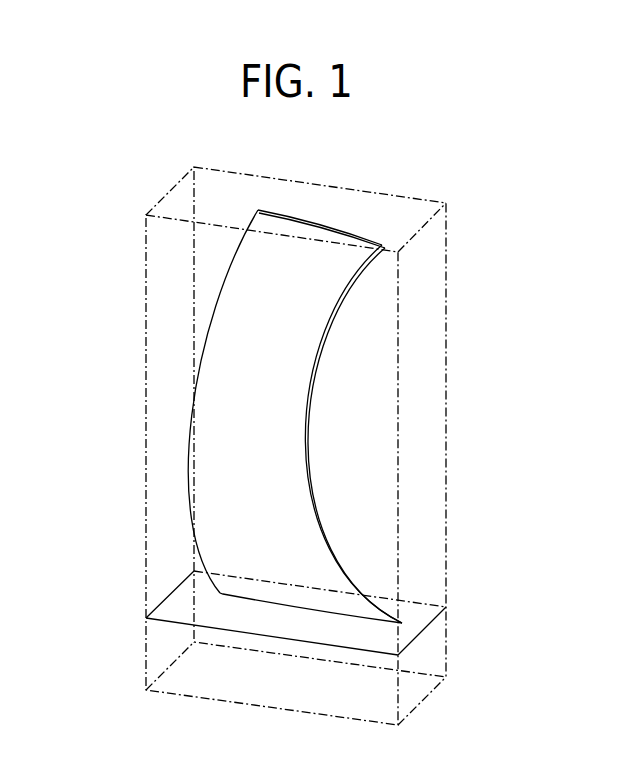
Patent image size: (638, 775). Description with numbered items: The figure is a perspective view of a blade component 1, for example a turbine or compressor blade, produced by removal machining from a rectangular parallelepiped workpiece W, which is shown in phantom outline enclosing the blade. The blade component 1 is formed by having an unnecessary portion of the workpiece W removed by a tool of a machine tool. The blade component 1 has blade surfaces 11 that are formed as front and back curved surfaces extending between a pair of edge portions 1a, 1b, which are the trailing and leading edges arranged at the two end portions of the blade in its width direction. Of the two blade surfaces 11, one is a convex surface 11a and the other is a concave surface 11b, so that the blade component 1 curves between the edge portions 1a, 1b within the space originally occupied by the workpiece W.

The blade component 1 is at (273, 400).
The blade surface 11 is at (273, 384).
The convex surface 11a is at (342, 223).
The concave surface 11b is at (212, 458).
The edge portion 1a is at (202, 540).
The edge portion 1b is at (323, 522).
The workpiece W is at (446, 323).